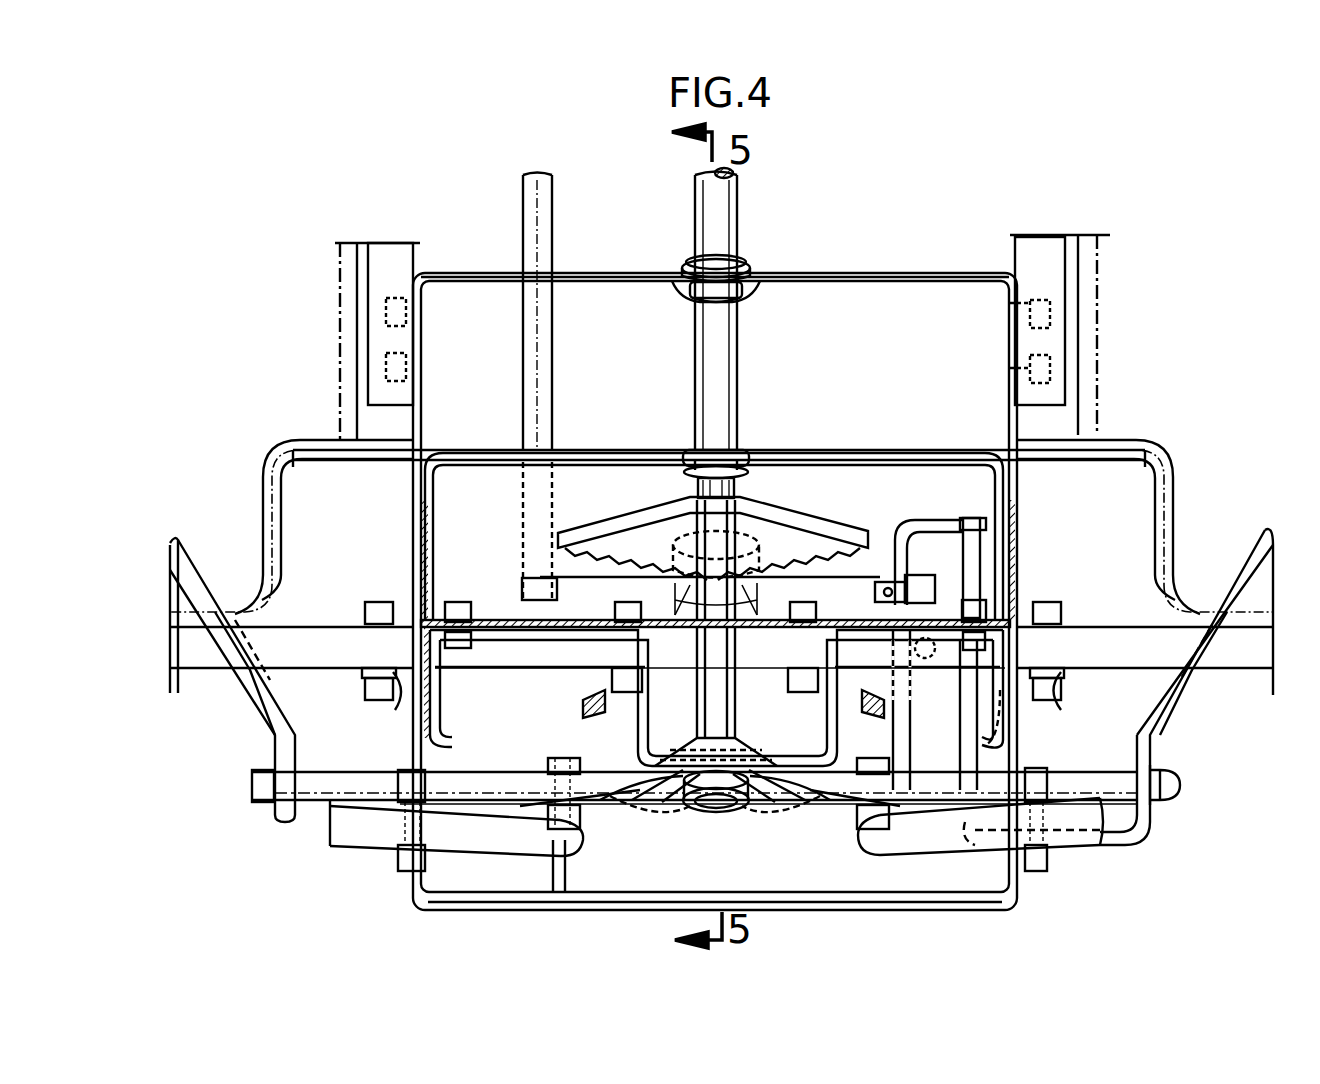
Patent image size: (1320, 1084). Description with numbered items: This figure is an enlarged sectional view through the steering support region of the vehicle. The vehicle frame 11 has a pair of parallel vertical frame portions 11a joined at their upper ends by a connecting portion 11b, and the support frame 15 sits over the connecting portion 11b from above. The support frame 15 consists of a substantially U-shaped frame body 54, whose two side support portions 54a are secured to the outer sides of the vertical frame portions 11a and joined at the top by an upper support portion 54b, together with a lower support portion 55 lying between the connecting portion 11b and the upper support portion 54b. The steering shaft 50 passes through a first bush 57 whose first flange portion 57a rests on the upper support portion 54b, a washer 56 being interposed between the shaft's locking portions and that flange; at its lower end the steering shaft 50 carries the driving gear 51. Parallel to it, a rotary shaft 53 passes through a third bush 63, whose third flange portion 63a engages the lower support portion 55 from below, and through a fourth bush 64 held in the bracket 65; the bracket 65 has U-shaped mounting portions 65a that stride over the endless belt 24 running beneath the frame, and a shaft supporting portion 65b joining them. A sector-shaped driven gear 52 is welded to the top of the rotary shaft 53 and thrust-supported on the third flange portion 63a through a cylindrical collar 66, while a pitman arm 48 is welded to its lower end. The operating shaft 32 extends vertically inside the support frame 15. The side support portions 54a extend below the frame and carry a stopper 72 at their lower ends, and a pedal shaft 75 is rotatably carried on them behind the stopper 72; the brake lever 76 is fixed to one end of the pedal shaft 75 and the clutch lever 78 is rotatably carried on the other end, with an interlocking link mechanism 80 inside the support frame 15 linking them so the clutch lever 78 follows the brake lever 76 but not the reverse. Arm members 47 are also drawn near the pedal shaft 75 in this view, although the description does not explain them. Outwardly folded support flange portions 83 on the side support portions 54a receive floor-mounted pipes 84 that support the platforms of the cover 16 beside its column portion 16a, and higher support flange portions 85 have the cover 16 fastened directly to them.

The vehicle frame 11 is at (590, 617).
The vertical frame portion 11a is at (440, 712).
The connecting portion 11b is at (506, 612).
The support frame 15 is at (948, 183).
The cover 16 is at (1175, 596).
The column portion 16a is at (1097, 340).
The rear wheel power transmitting endless belt 24 is at (586, 705).
The operating shaft 32 is at (533, 342).
The swing arm 47 is at (370, 818).
The pitman arm 48 is at (790, 790).
The steering shaft 50 is at (722, 338).
The driving gear 51 is at (752, 625).
The driven gear 52 is at (826, 522).
The rotary shaft 53 is at (712, 688).
The frame body 54 is at (865, 272).
The side support portion 54a is at (411, 488).
The upper support portion 54b is at (497, 272).
The lower support portion 55 is at (925, 450).
The washer 56 is at (740, 268).
The first bush 57 is at (692, 300).
The first flange portion 57a is at (692, 268).
The third bush 63 is at (722, 445).
The third flange portion 63a is at (750, 462).
The fourth bush 64 is at (735, 745).
The bracket 65 is at (645, 800).
The mounting portion 65a is at (866, 622).
The shaft supporting portion 65b is at (678, 803).
The cylindrical collar 66 is at (700, 490).
The stopper 72 is at (780, 905).
The pedal shaft 75 is at (487, 796).
The brake lever 76 is at (268, 712).
The clutch lever 78 is at (1168, 716).
The interlocking link mechanism 80 is at (980, 565).
The support flange portion 83 is at (365, 682).
The floor-mounted pipe 84 is at (323, 626).
The support flange portion 85 is at (352, 440).